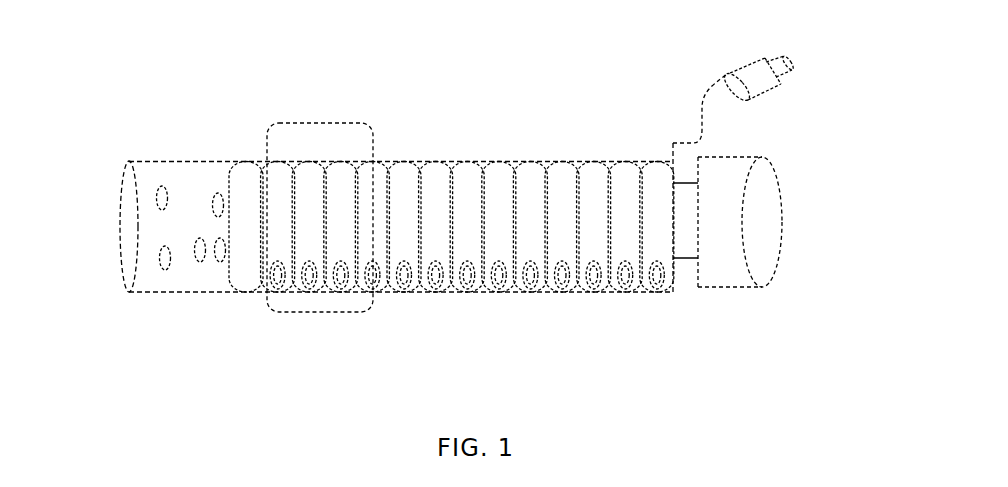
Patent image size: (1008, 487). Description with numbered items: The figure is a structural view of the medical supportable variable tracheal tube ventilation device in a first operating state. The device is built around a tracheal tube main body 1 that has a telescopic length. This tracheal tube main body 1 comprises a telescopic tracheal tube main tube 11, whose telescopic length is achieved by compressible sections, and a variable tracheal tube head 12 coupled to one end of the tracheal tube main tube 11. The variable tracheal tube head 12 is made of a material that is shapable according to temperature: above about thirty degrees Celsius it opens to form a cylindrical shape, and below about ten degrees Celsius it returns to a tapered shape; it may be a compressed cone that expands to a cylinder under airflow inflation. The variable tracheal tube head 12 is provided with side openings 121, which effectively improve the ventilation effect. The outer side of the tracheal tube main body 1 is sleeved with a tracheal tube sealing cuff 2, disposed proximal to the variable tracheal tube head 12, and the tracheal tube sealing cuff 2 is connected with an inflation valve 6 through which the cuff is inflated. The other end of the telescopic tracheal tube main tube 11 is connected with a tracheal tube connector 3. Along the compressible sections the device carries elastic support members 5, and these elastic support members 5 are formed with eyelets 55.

The tracheal tube main body 1 is at (162, 90).
The telescopic tracheal tube main tube 11 is at (433, 160).
The variable tracheal tube head 12 is at (195, 178).
The side openings 121 is at (165, 257).
The tracheal tube sealing cuff 2 is at (285, 305).
The tracheal tube connector 3 is at (737, 207).
The elastic support members 5 is at (483, 227).
The eyelets of the elastic support members 55 is at (405, 273).
The inflation valve 6 is at (743, 82).